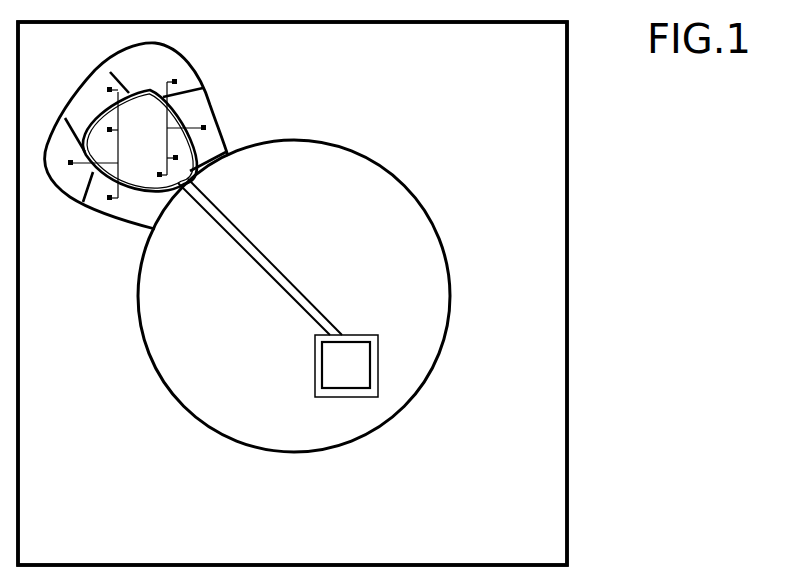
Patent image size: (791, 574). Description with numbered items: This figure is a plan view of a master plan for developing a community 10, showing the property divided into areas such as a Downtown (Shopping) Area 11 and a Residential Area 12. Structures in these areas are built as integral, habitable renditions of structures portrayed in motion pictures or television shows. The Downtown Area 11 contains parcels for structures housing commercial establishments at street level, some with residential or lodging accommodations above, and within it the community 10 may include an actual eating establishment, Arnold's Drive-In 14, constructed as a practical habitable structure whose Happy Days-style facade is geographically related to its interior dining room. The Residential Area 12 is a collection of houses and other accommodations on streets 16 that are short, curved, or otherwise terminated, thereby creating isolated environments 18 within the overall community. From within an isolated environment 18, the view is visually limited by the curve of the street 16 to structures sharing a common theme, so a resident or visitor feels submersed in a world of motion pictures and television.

The community 10 is at (578, 254).
The Downtown (Shopping) Area 11 is at (294, 296).
The Residential Area 12 is at (292, 293).
The Arnold's Drive-In 14 is at (278, 288).
The streets 16 is at (200, 115).
The isolated environments 18 is at (148, 96).